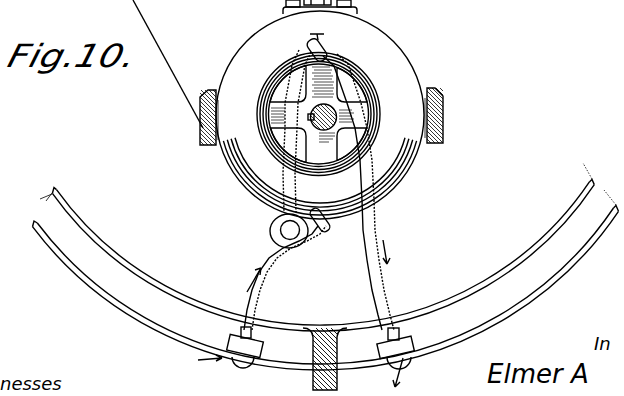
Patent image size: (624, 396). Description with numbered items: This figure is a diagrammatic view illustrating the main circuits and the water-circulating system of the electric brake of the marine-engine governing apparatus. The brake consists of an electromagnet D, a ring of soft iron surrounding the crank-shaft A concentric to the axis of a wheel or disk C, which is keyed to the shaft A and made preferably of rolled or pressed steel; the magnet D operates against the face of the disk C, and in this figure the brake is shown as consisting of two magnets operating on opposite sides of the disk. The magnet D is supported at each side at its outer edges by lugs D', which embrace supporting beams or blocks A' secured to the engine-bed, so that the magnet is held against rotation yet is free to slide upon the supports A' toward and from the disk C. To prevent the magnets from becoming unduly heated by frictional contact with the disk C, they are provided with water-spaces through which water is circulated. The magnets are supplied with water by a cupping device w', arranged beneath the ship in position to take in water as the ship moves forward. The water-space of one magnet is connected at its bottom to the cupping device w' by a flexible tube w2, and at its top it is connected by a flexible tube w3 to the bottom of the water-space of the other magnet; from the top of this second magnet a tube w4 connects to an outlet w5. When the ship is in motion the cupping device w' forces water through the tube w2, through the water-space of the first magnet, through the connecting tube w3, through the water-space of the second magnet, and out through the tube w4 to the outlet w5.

The electromagnet D is at (320, 109).
The lugs D' is at (315, 118).
The supporting beams or blocks A' is at (318, 119).
The wheel or disk C is at (318, 114).
The crank-shaft A is at (329, 132).
The flexible tube w3 is at (284, 80).
The flexible tube w2 is at (266, 282).
The tube w4 is at (376, 272).
The cupping device w' is at (230, 359).
The outlet w5 is at (411, 362).